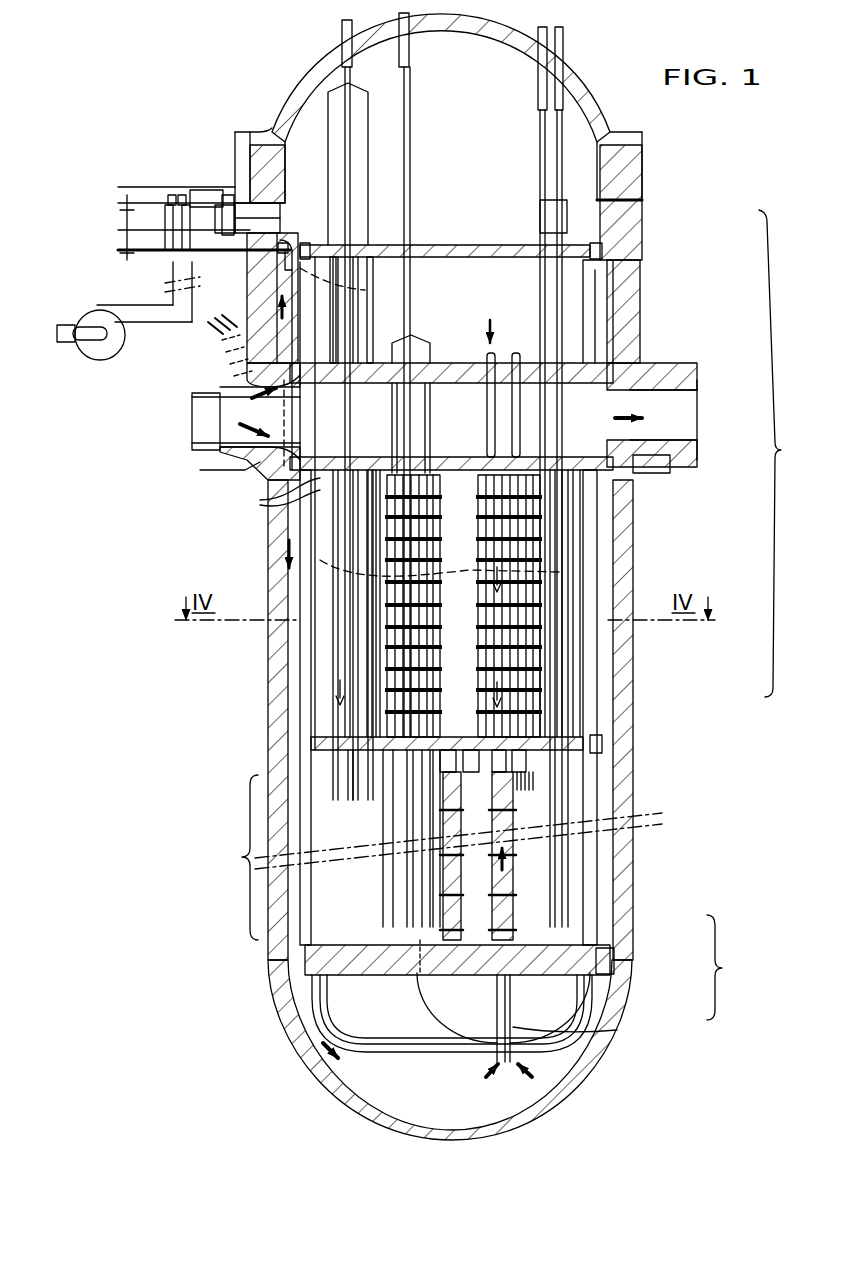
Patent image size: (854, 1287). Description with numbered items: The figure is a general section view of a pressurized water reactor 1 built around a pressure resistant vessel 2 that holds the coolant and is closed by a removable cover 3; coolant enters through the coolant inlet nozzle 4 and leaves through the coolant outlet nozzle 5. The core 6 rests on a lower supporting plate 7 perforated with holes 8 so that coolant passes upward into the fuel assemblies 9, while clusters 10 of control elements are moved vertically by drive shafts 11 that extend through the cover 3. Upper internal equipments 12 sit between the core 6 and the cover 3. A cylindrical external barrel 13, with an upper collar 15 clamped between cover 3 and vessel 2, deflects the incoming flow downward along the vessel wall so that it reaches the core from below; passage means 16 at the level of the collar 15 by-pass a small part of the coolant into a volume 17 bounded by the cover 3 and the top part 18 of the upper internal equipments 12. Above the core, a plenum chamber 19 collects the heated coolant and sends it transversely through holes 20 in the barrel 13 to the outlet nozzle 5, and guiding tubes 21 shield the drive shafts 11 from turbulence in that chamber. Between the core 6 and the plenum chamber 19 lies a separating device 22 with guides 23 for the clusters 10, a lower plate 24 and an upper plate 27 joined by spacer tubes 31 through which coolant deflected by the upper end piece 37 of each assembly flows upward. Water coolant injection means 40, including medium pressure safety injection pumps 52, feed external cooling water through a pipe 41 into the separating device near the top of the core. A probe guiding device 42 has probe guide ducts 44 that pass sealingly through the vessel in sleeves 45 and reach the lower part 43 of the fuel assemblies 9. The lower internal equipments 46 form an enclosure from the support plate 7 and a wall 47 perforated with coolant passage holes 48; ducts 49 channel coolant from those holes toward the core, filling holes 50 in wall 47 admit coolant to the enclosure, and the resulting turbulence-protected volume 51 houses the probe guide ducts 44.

The pressurized water reactor 1 is at (198, 676).
The pressure resistant vessel 2 is at (626, 665).
The removable cover 3 is at (632, 184).
The coolant inlet nozzle 4 is at (205, 393).
The coolant outlet nozzle 5 is at (650, 368).
The core 6 is at (442, 857).
The lower supporting plate 7 is at (612, 960).
The holes 8 is at (508, 958).
The fuel assemblies 9 is at (506, 705).
The clusters of control elements 10 is at (330, 497).
The drive shafts 11 is at (275, 498).
The upper internal equipments 12 is at (784, 453).
The cylindrical external barrel 13 is at (598, 518).
The upper collar 15 is at (610, 294).
The passage means 16 is at (430, 422).
The volume 17 is at (458, 177).
The top part of the upper internal equipments 18 is at (458, 244).
The plenum chamber 19 is at (476, 427).
The holes 20 is at (660, 432).
The guiding tubes 21 is at (490, 365).
The separating device 22 is at (474, 615).
The guides 23 is at (540, 585).
The lower plate 24 is at (597, 742).
The upper plate 27 is at (640, 460).
The spacer tubes 31 is at (530, 612).
The upper end piece 37 is at (560, 765).
The water coolant injection means 40 is at (128, 303).
The pipe 41 is at (235, 437).
The probe guiding device 42 is at (280, 585).
The lower part of the fuel assemblies 43 is at (420, 975).
The probe guide ducts 44 is at (308, 1032).
The sleeves 45 is at (225, 345).
The lower internal equipments 46 is at (730, 967).
The wall 47 is at (213, 200).
The coolant passage holes 48 is at (515, 1057).
The ducts 49 is at (555, 1050).
The holes 50 is at (390, 1055).
The volume 51 is at (489, 1022).
The medium pressure safety injection pumps 52 is at (100, 350).